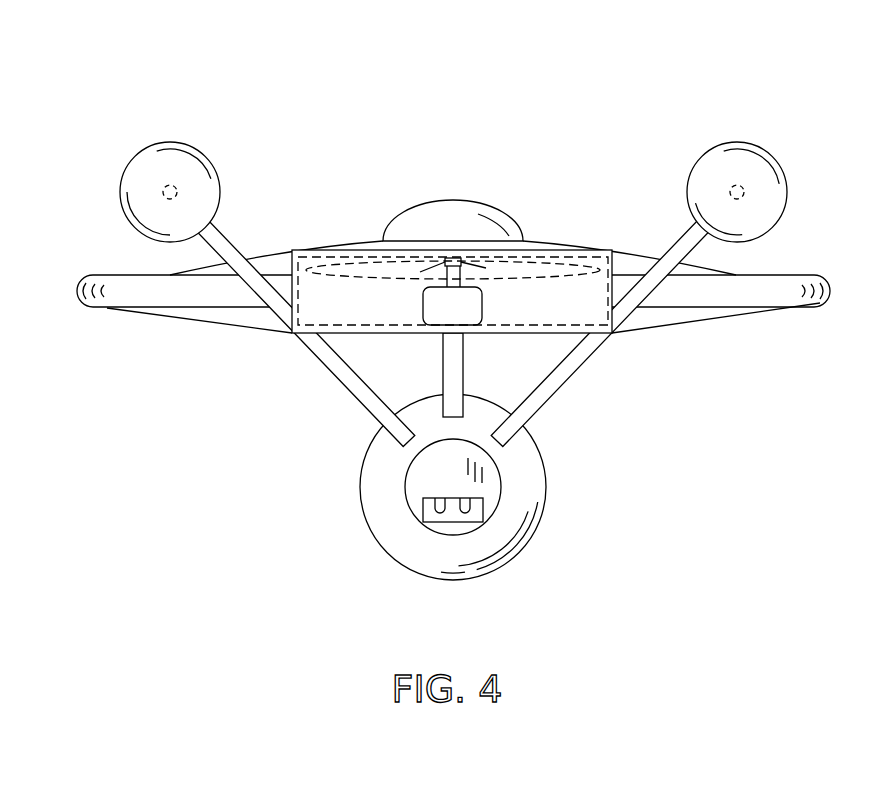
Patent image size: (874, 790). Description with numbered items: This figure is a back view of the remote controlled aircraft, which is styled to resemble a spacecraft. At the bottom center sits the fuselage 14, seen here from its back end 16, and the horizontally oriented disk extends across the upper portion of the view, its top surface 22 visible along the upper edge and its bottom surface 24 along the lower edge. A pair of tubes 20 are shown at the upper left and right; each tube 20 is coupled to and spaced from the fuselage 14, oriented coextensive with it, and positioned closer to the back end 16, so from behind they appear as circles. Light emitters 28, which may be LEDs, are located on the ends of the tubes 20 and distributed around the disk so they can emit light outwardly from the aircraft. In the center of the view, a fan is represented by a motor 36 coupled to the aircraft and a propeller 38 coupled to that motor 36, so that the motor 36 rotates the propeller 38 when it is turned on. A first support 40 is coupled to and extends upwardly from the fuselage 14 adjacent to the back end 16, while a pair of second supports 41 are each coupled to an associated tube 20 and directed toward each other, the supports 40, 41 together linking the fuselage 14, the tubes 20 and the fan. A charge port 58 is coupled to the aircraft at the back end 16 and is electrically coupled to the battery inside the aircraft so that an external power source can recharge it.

The fuselage 14 is at (527, 546).
The back end 16 is at (415, 484).
The tubes 20 is at (172, 147).
The top surface 22 is at (790, 275).
The bottom surface 24 is at (727, 322).
The light emitters 28 is at (178, 192).
The motor 36 is at (484, 316).
The propeller 38 is at (330, 268).
The first support 40 is at (445, 379).
The second supports 41 is at (340, 375).
The charge port 58 is at (452, 522).